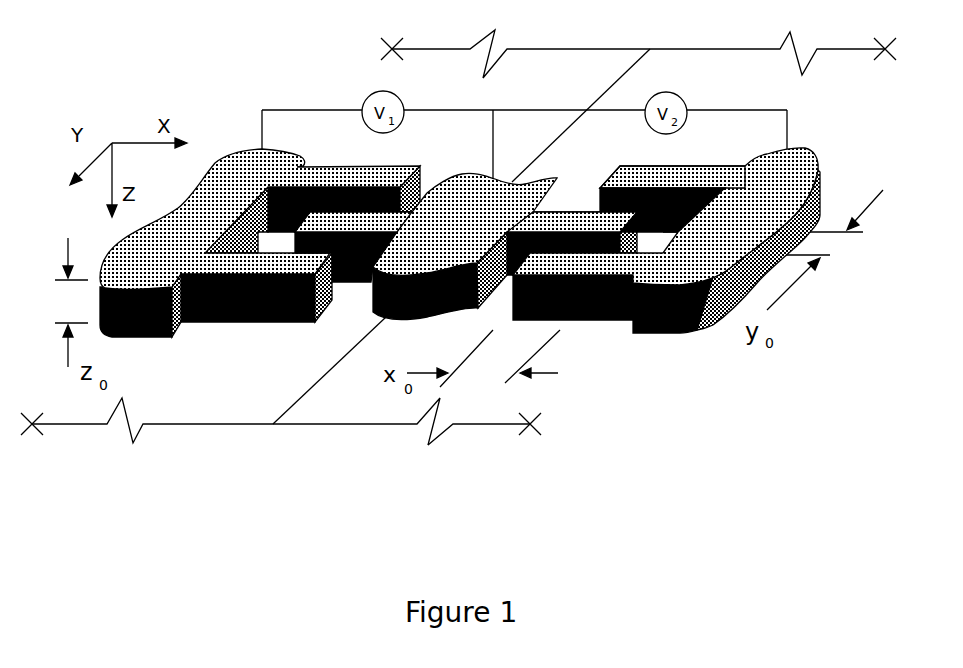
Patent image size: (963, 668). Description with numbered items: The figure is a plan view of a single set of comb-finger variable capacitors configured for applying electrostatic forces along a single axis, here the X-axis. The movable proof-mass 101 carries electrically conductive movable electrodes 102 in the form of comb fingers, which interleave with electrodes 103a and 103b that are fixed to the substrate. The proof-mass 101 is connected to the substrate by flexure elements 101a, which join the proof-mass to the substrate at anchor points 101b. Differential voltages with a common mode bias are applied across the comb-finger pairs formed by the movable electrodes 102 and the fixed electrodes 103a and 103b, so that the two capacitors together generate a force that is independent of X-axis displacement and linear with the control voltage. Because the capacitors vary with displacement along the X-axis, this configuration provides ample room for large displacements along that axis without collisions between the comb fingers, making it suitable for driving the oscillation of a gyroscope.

The proof-mass 101 is at (463, 218).
The flexure element 101a is at (418, 438).
The anchor point 101b is at (520, 427).
The movable electrode 102 is at (340, 220).
The fixed electrode 103a is at (245, 322).
The fixed electrode 103b is at (573, 320).